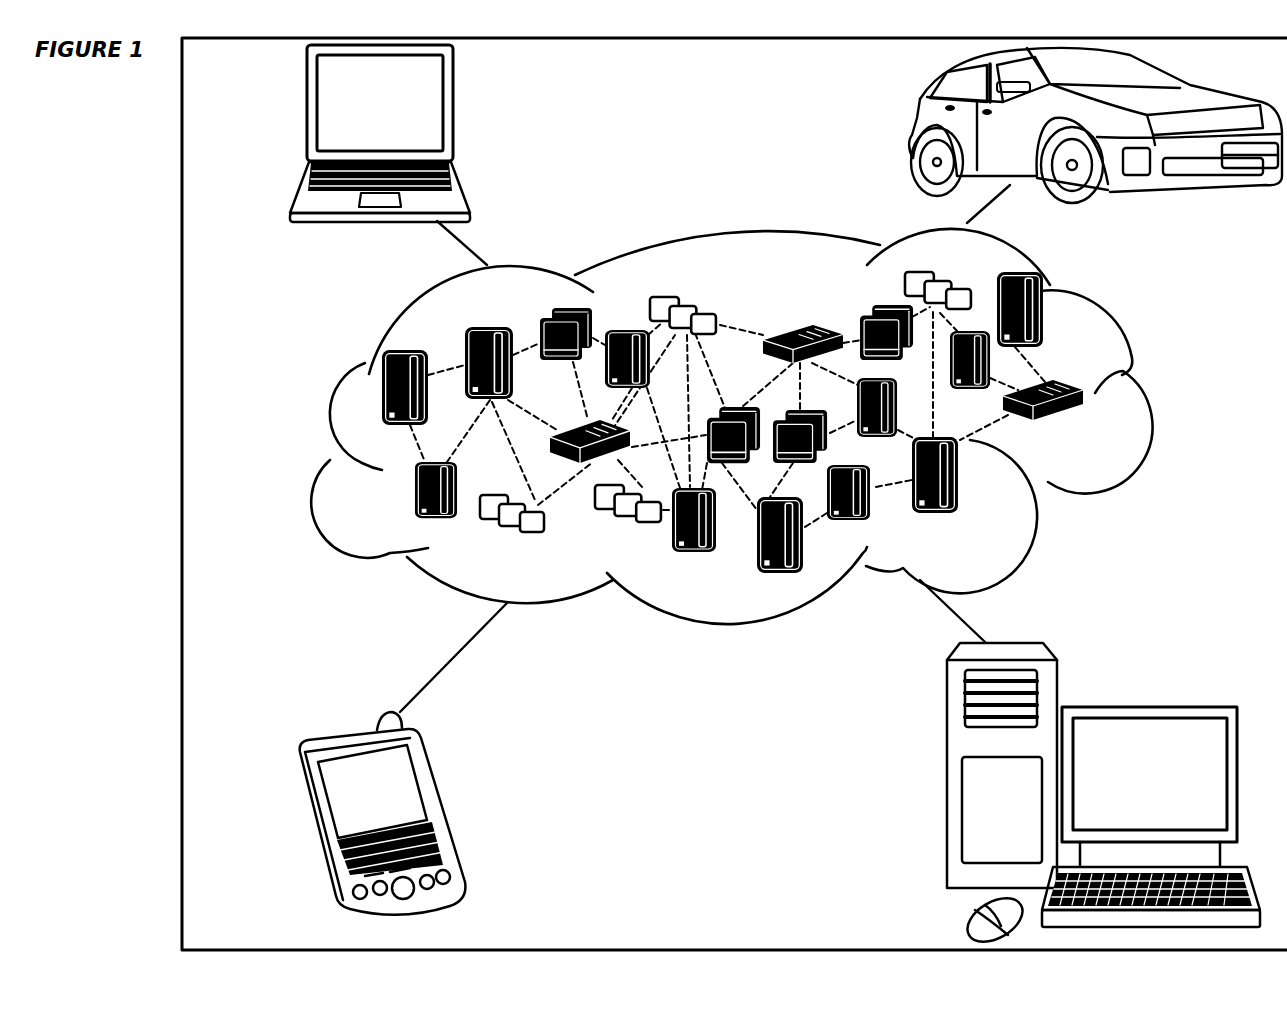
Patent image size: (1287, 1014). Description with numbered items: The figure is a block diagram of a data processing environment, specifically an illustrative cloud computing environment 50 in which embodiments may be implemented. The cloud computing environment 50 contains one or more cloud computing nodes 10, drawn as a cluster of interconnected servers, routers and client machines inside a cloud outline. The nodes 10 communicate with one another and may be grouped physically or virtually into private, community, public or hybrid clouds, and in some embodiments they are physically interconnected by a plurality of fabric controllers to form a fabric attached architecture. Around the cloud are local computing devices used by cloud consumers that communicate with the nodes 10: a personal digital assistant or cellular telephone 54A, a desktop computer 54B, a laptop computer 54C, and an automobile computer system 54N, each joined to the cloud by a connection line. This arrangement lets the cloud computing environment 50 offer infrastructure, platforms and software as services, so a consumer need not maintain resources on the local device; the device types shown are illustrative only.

The cloud computing node 10 is at (1100, 435).
The cloud computing environment 50 is at (763, 426).
The personal digital assistant or cellular telephone 54A is at (443, 803).
The desktop computer 54B is at (1147, 706).
The laptop computer 54C is at (453, 110).
The automobile computer system 54N is at (917, 132).